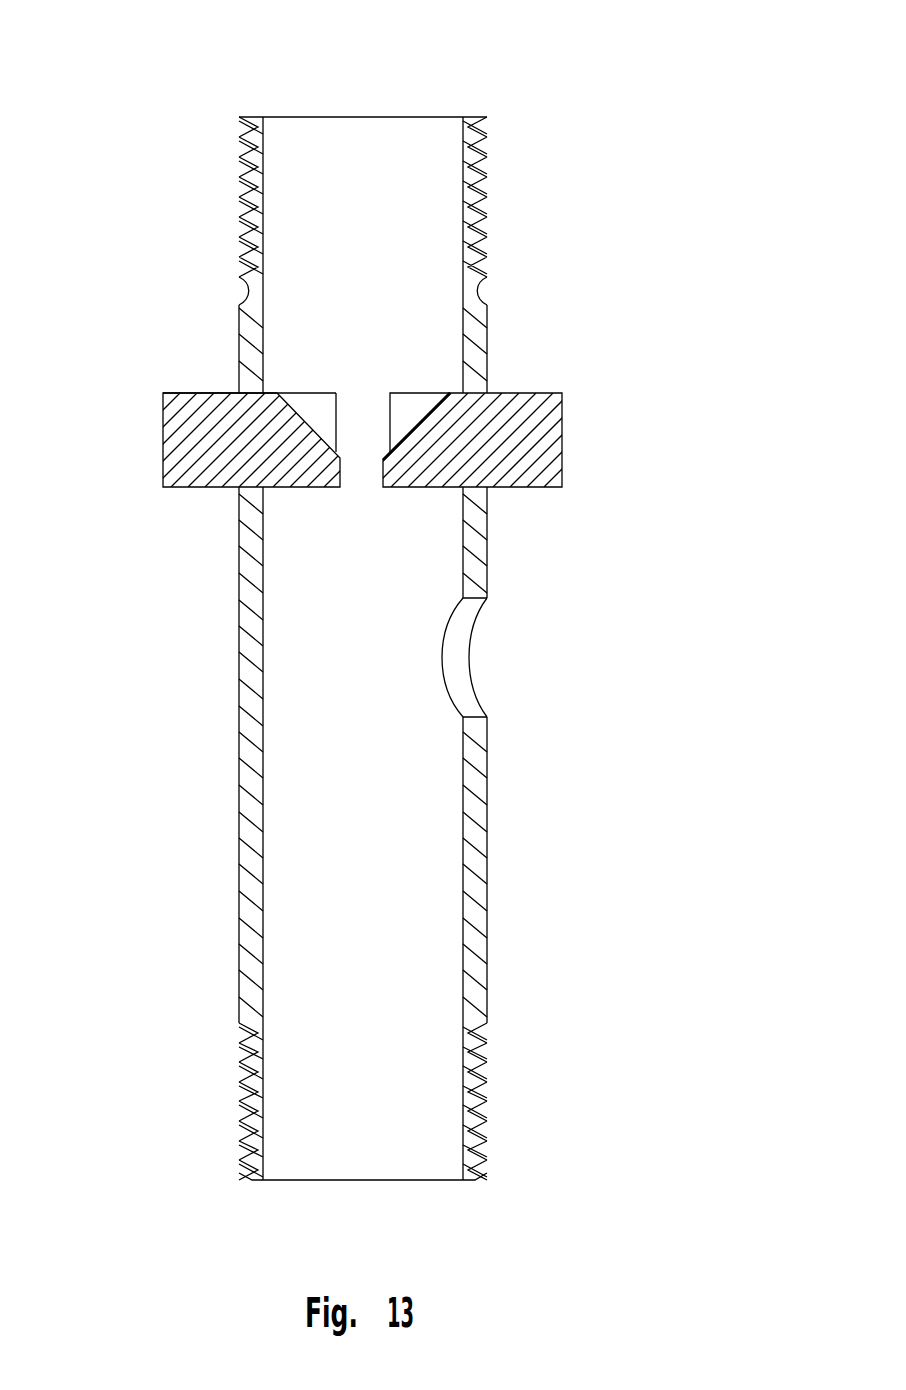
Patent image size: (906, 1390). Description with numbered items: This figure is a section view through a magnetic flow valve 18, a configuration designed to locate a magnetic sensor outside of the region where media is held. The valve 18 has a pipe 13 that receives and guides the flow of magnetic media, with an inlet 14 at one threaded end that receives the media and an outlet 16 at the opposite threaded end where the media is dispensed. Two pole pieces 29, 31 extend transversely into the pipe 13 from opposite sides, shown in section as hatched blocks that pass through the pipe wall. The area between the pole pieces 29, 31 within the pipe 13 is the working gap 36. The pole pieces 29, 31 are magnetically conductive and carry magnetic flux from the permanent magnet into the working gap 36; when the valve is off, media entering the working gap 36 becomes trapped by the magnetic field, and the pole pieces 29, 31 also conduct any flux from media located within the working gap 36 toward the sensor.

The pipe 13 is at (487, 866).
The inlet 14 is at (318, 117).
The outlet 16 is at (337, 1180).
The valve 18 is at (692, 110).
The pole piece 29 is at (163, 418).
The pole piece 31 is at (562, 427).
The working gap 36 is at (365, 478).